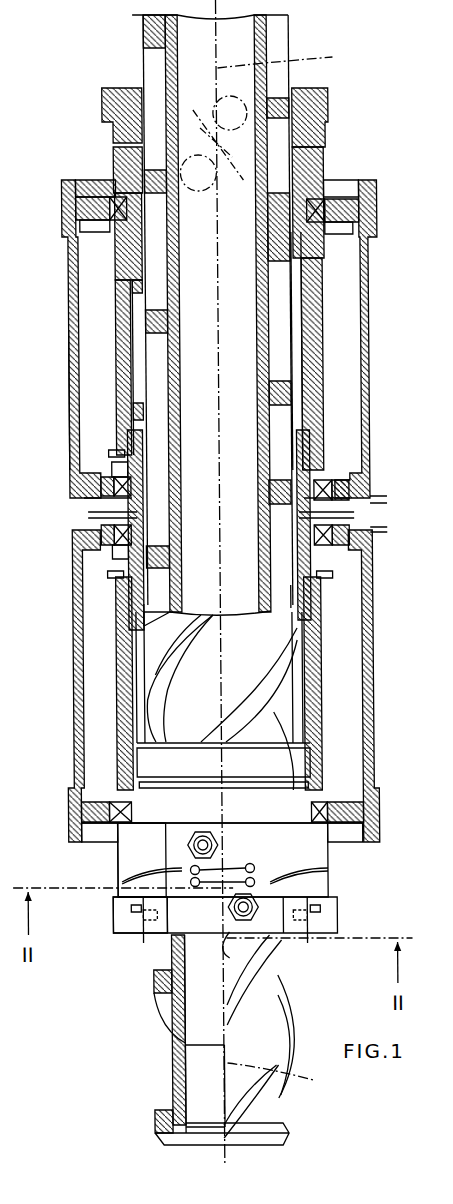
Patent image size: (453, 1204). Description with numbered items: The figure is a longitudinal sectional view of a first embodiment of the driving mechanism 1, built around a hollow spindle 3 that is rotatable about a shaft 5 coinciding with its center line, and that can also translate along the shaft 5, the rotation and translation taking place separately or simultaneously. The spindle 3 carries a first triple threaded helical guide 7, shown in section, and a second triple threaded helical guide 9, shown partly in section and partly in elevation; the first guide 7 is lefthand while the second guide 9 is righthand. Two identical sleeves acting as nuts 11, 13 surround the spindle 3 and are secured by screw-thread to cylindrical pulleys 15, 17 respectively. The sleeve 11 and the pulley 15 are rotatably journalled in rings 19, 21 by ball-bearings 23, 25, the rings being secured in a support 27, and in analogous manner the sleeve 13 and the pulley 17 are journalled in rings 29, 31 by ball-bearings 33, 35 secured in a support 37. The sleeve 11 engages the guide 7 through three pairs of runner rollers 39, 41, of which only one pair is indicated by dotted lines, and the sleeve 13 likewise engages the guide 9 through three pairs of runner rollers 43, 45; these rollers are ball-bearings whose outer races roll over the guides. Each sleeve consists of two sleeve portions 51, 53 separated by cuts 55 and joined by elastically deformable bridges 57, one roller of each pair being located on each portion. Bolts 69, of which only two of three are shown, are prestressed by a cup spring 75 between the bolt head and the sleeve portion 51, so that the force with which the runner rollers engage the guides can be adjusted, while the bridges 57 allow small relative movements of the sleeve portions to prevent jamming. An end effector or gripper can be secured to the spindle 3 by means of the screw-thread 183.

The driving mechanism 1 is at (61, 460).
The hollow spindle 3 is at (262, 30).
The shaft 5 is at (312, 1085).
The first triple threaded helical guide 7 is at (158, 33).
The second triple threaded helical guide 9 is at (155, 982).
The first sleeve acting as nut 11 is at (330, 132).
The second sleeve acting as nut 13 is at (326, 885).
The cylindrical pulley 15 is at (116, 317).
The cylindrical pulley 17 is at (312, 680).
The ring 19 is at (76, 208).
The ring 21 is at (98, 488).
The ball-bearing 23 is at (328, 210).
The ball-bearing 25 is at (308, 492).
The support 27 is at (67, 270).
The ring 29 is at (73, 815).
The ring 31 is at (98, 545).
The ball-bearing 33 is at (328, 812).
The ball-bearing 35 is at (322, 538).
The support 37 is at (72, 620).
The runner roller 39 is at (212, 100).
The runner roller 41 is at (211, 197).
The runner roller 43 is at (222, 958).
The runner roller 45 is at (233, 845).
The sleeve portion 51 is at (115, 102).
The sleeve portion 53 is at (118, 163).
The cut 55 is at (308, 160).
The elastically deformable bridge 57 is at (247, 866).
The bolt 69 is at (132, 930).
The cup spring 75 is at (126, 910).
The screw-thread 183 is at (176, 1095).